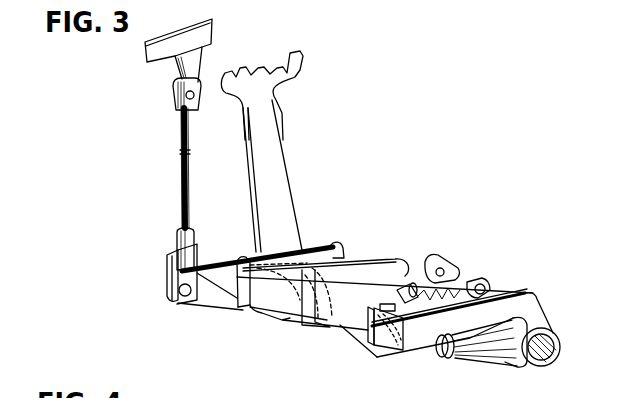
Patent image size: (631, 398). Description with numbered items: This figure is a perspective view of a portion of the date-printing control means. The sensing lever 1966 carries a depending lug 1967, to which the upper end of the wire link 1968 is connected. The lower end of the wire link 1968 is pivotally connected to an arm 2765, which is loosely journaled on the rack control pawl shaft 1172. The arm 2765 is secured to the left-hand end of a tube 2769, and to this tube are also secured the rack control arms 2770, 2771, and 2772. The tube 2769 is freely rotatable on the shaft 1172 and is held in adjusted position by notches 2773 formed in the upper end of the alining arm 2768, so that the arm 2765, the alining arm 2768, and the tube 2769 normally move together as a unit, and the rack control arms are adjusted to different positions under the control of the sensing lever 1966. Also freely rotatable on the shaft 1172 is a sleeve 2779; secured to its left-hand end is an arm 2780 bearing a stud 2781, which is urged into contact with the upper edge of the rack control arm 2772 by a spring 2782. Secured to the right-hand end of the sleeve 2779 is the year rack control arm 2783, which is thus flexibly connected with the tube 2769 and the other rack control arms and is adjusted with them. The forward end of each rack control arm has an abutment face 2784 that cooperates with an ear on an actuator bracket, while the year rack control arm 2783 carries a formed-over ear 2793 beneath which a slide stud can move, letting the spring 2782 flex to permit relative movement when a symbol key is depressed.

The lever 1966 is at (145, 53).
The depending lug 1967 is at (179, 79).
The wire link 1968 is at (182, 175).
The rack control arm 2770 is at (207, 277).
The abutment face 2784 is at (167, 273).
The arm 2765 is at (203, 298).
The rack control arm 2771 is at (248, 295).
The rack control arm 2772 is at (327, 317).
The tube 2769 is at (353, 333).
The formed-over ear 2793 is at (402, 332).
The year rack control arm 2783 is at (525, 300).
The sleeve 2779 is at (493, 360).
The rack control pawl shaft 1172 is at (552, 340).
The stud 2781 is at (427, 262).
The arm 2780 is at (453, 272).
The spring 2782 is at (480, 280).
The alining arm 2768 is at (278, 157).
The notches 2773 is at (262, 92).